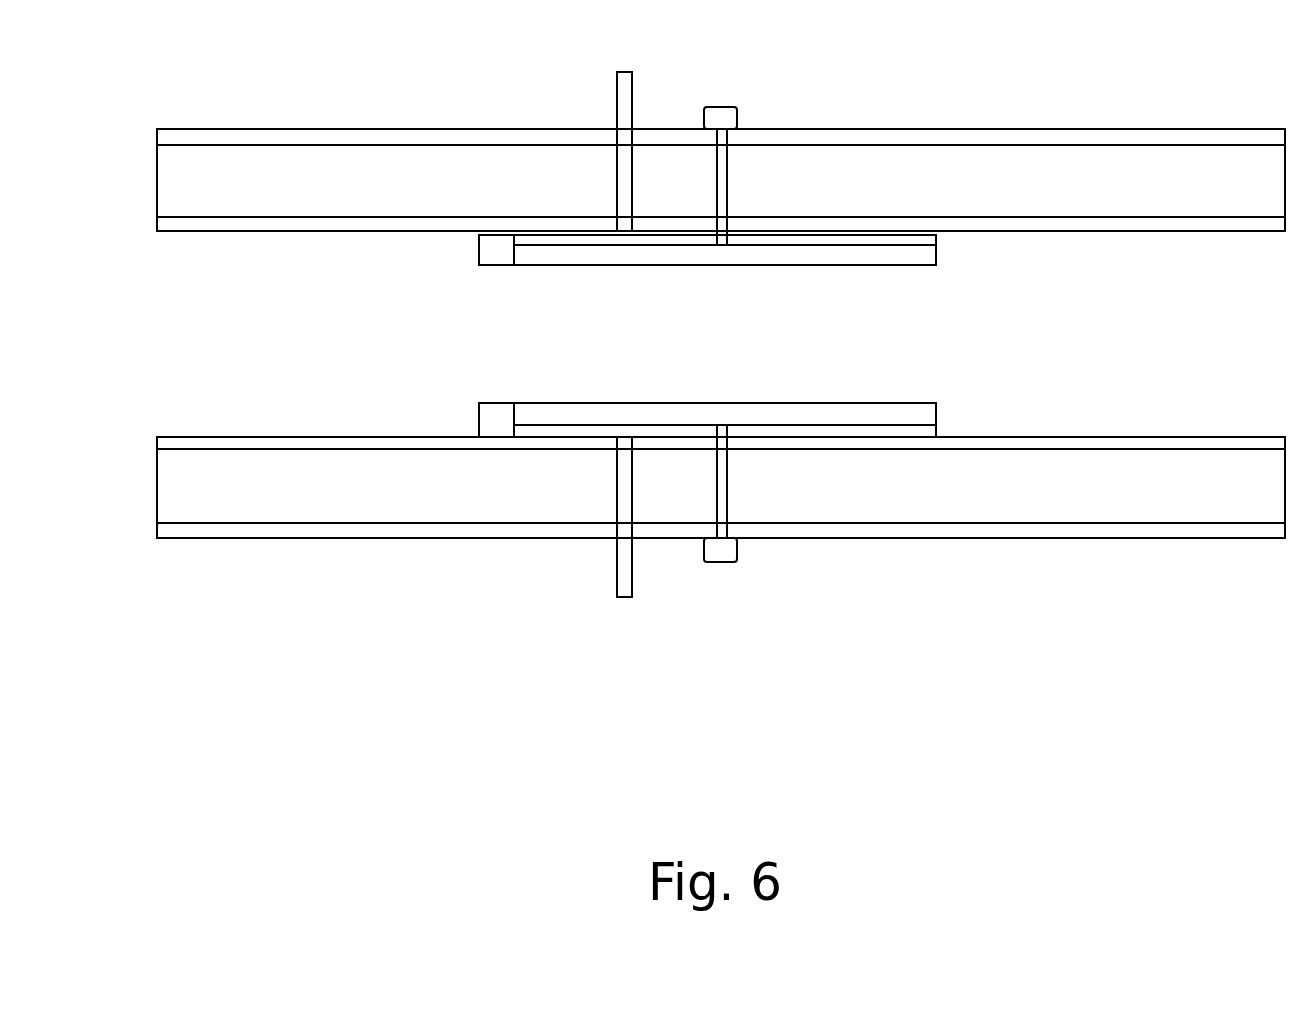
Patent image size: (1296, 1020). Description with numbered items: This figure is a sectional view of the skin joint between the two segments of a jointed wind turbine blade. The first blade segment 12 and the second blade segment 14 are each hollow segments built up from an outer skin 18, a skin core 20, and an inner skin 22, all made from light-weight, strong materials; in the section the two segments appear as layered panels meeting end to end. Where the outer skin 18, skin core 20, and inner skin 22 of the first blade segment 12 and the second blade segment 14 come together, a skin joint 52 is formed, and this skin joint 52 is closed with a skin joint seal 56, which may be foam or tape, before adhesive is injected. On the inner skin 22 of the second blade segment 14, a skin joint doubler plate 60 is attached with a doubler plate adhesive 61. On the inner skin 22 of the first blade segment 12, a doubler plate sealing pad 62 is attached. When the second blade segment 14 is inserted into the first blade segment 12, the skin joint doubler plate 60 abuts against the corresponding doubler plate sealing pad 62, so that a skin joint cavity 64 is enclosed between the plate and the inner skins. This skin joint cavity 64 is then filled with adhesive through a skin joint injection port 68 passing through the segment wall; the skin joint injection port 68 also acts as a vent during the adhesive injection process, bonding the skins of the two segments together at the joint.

The first blade segment 12 is at (355, 129).
The second blade segment 14 is at (1012, 129).
The outer skin 18 is at (1135, 134).
The skin core 20 is at (167, 185).
The inner skin 22 is at (1185, 233).
The skin joint 52 is at (727, 172).
The skin joint seal 56 is at (725, 107).
The skin joint doubler plate 60 is at (808, 265).
The doubler plate adhesive 61 is at (937, 237).
The doubler plate sealing pad 62 is at (479, 248).
The skin joint cavity 64 is at (595, 238).
The skin joint injection port 68 is at (617, 85).